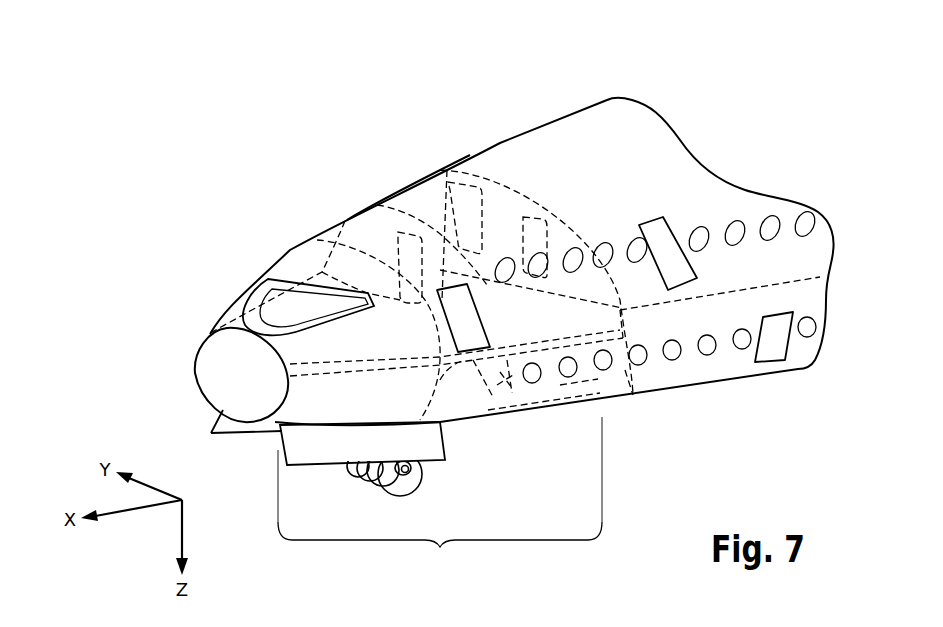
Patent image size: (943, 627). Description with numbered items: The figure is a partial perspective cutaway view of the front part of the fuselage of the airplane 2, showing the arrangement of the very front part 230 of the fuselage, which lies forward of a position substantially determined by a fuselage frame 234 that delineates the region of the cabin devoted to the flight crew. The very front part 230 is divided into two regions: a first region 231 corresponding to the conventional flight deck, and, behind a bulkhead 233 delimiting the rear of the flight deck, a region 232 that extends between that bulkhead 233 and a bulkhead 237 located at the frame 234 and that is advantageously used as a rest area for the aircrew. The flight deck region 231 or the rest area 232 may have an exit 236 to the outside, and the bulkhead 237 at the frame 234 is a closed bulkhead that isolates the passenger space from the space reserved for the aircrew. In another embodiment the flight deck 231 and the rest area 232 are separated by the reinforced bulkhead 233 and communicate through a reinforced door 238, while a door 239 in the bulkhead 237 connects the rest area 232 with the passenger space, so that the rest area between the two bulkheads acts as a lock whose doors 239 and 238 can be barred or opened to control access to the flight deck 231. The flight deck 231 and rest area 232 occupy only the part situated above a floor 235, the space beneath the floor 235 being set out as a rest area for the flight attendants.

The airplane 2 is at (569, 96).
The very front part 230 is at (440, 497).
The flight deck region 231 is at (305, 278).
The rest area region 232 is at (415, 178).
The bulkhead 233 is at (470, 392).
The fuselage frame 234 is at (633, 398).
The floor 235 is at (598, 380).
The exit 236 is at (505, 383).
The bulkhead 237 is at (503, 210).
The door 238 is at (395, 242).
The door 239 is at (448, 180).